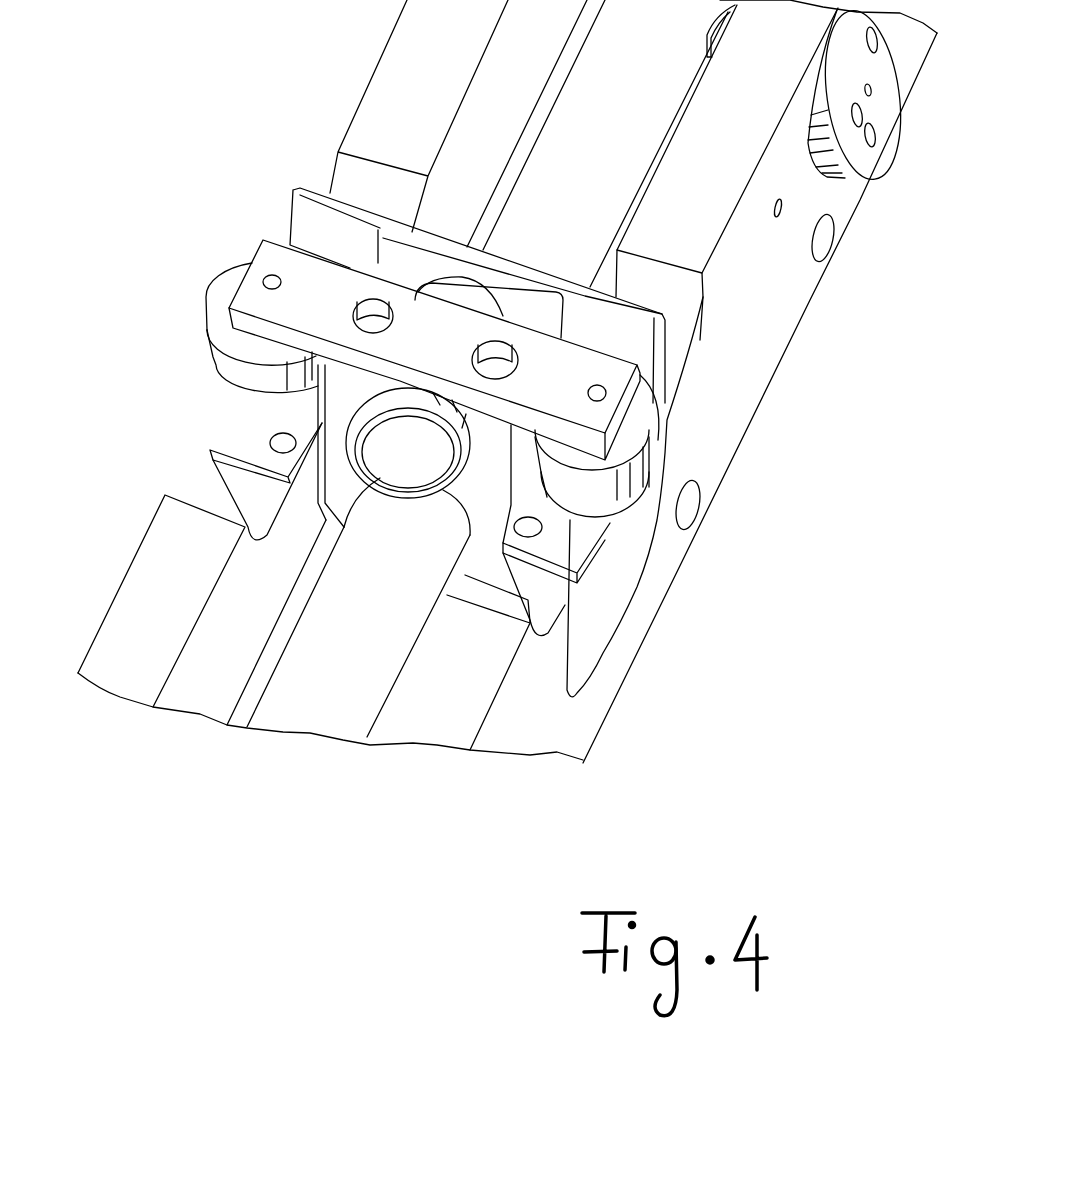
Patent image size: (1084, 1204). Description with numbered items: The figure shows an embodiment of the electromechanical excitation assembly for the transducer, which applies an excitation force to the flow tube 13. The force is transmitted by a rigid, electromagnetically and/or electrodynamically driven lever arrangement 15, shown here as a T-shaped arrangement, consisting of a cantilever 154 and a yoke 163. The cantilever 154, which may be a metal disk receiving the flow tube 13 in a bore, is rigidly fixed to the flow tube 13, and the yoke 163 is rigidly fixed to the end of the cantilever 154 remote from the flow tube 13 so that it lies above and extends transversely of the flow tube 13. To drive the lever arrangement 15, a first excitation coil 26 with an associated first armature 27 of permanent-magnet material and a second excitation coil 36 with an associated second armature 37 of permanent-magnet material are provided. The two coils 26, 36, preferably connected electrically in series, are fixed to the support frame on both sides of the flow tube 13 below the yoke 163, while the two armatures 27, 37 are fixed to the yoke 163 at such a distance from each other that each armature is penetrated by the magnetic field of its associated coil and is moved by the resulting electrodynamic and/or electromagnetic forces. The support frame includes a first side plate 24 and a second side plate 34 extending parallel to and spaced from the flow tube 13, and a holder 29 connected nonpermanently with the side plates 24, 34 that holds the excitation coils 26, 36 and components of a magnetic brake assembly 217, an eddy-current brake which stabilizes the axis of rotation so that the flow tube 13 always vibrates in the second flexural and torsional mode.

The flow tube 13 is at (387, 677).
The lever arrangement 15 is at (215, 262).
The first side plate 24 is at (373, 108).
The first excitation coil 26 is at (212, 385).
The first armature 27 is at (203, 289).
The holder 29 is at (645, 335).
The second side plate 34 is at (728, 152).
The second excitation coil 36 is at (624, 526).
The second armature 37 is at (668, 472).
The cantilever 154 is at (340, 402).
The yoke 163 is at (283, 262).
The magnetic brake assembly 217 is at (400, 448).